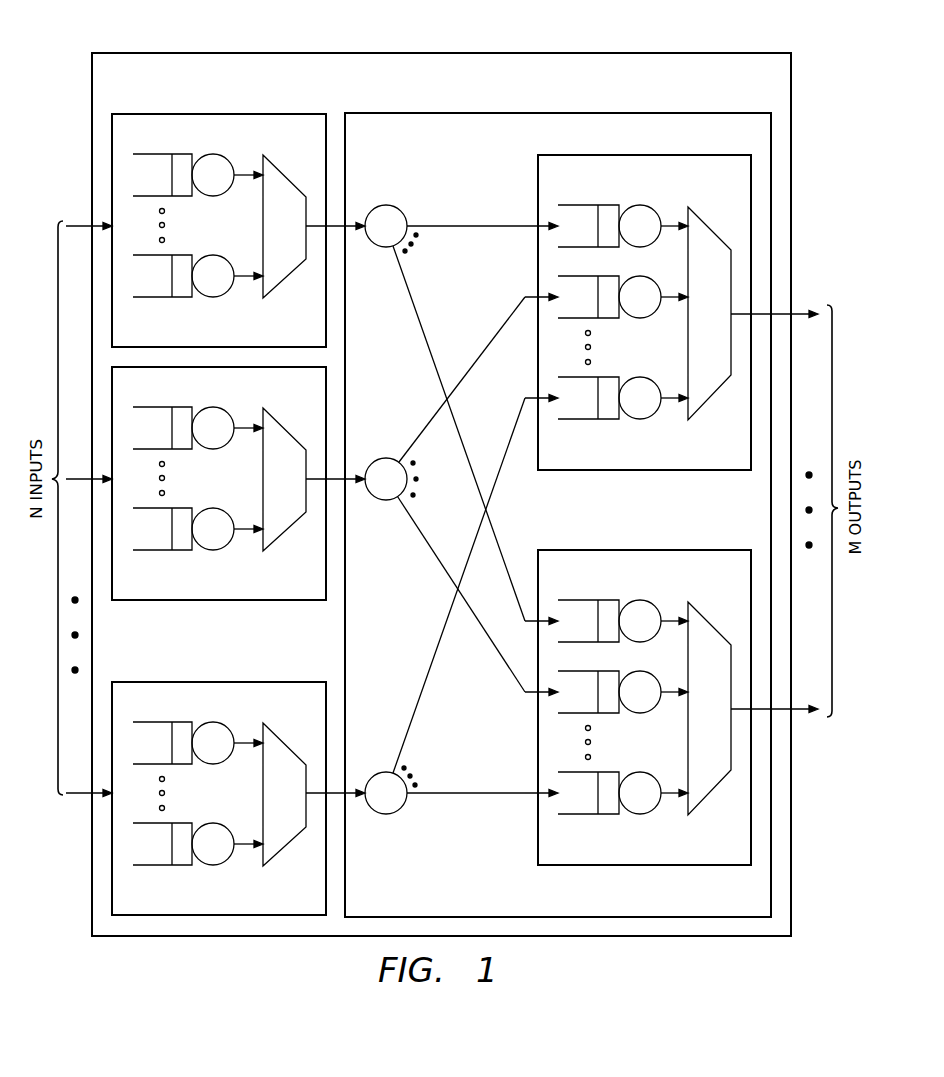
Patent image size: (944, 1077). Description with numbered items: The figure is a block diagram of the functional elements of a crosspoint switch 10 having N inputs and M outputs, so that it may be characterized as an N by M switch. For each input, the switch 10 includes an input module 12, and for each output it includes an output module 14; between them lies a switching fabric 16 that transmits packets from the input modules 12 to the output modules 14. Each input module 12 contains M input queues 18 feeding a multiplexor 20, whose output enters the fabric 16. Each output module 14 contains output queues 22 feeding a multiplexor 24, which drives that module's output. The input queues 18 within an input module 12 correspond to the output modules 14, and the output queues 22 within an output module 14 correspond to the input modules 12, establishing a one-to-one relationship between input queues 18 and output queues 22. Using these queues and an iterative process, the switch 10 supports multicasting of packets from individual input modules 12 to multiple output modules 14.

The crosspoint switch 10 is at (447, 53).
The input module 12 is at (225, 114).
The output module 14 is at (537, 195).
The switching fabric 16 is at (578, 113).
The input queue 18 is at (231, 158).
The multiplexor 20 is at (287, 173).
The output queue 22 is at (653, 207).
The multiplexor 24 is at (710, 225).